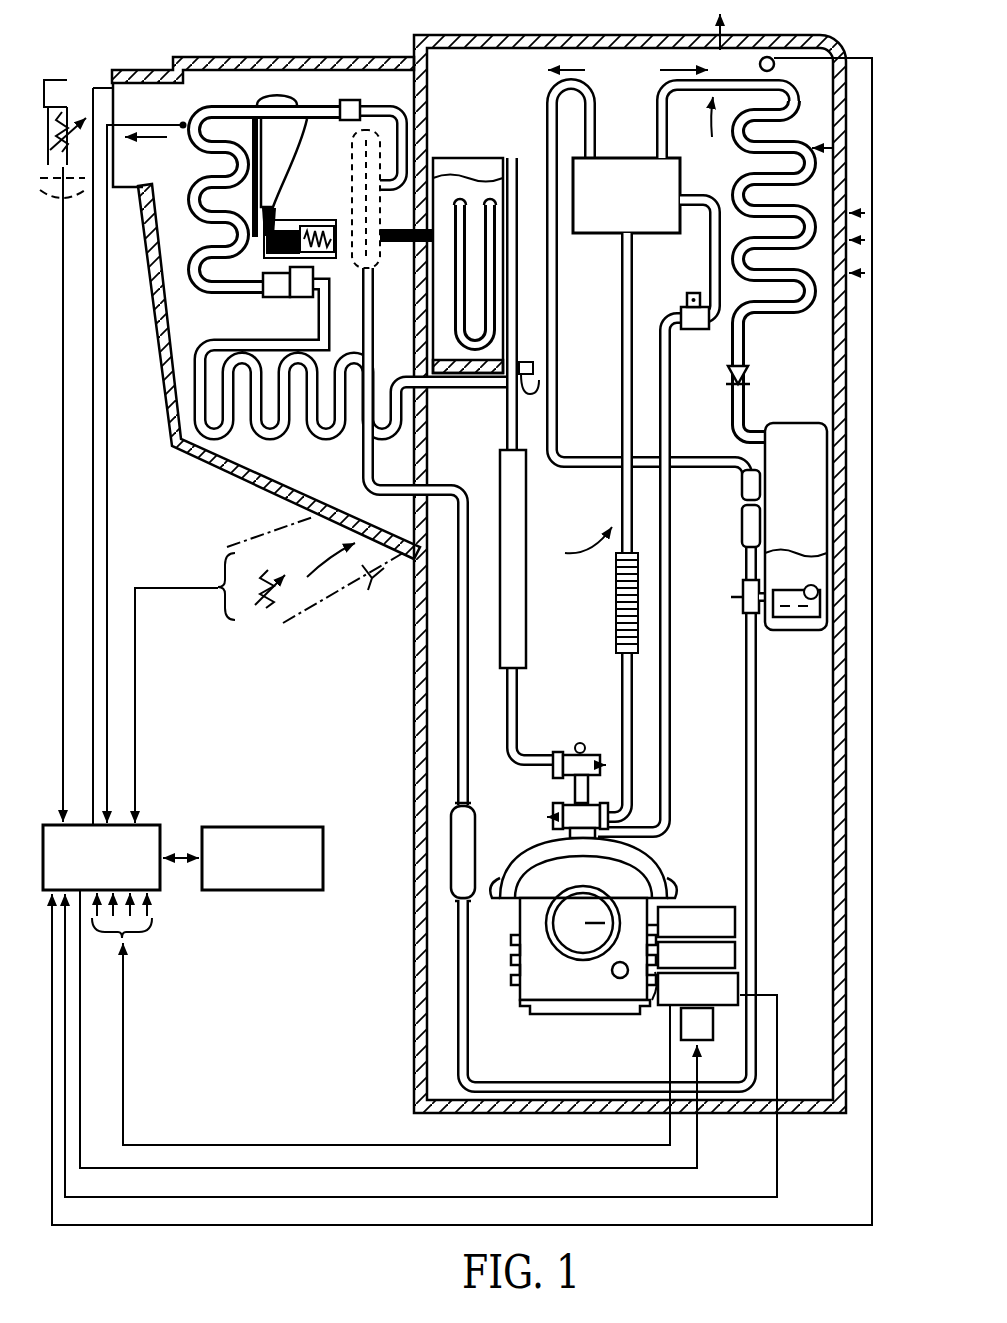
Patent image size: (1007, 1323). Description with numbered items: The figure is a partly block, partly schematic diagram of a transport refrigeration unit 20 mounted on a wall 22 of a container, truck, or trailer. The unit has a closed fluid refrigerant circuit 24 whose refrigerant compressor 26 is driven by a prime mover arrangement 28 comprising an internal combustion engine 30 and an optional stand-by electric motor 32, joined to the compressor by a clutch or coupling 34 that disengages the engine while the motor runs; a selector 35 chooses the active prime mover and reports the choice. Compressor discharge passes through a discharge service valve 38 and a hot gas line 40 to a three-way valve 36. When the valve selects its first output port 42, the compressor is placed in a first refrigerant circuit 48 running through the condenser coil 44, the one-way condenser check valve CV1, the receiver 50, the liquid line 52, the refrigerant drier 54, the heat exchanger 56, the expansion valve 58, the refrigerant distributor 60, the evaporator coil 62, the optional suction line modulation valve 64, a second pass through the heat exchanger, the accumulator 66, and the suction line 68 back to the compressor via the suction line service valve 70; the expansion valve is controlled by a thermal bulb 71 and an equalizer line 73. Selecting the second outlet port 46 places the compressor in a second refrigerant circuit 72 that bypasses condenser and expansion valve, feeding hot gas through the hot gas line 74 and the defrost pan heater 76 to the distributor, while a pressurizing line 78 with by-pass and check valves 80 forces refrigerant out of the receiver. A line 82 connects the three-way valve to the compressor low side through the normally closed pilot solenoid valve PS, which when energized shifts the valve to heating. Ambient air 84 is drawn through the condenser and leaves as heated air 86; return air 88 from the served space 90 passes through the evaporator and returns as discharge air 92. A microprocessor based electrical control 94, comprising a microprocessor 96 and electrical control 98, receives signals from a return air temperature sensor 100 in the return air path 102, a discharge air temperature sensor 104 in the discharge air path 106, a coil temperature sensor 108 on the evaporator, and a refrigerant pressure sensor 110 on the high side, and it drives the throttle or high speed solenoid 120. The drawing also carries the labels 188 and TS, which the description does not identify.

The transport refrigeration unit 20 is at (382, 1259).
The wall 22 is at (428, 108).
The closed fluid refrigerant circuit 24 is at (575, 546).
The refrigerant compressor 26 is at (520, 970).
The prime mover arrangement 28 is at (726, 936).
The internal combustion engine 30 is at (652, 1000).
The stand-by electric motor 32 is at (736, 922).
The clutch or coupling 34 is at (736, 956).
The selector 35 is at (739, 987).
The three-way valve 36 is at (614, 139).
The discharge service valve 38 is at (563, 812).
The hot gas line 40 is at (618, 473).
The first output port 42 is at (669, 157).
The condenser coil 44 is at (810, 264).
The second outlet port 46 is at (582, 148).
The first refrigerant circuit 48 is at (660, 70).
The receiver 50 is at (800, 618).
The liquid line 52 is at (758, 740).
The refrigerant drier 54 is at (451, 846).
The heat exchanger 56 is at (374, 268).
The expansion valve 58 is at (272, 297).
The refrigerant distributor 60 is at (314, 292).
The evaporator coil 62 is at (188, 228).
The controllable suction line modulation valve 64 is at (356, 100).
The accumulator 66 is at (468, 158).
The suction line 68 is at (506, 425).
The suction line service valve 70 is at (580, 750).
The thermal bulb 71 is at (272, 92).
The second refrigerant circuit 72 is at (585, 70).
The equalizer line 73 is at (296, 168).
The hot gas line 74 is at (559, 300).
The defrost pan heater 76 is at (286, 432).
The by-pass or pressurizing line 78 is at (598, 458).
The by-pass and check valves 80 is at (741, 521).
The conduit or line 82 is at (672, 548).
The ambient air 84 is at (852, 208).
The heated air 86 is at (717, 24).
The return air 88 is at (314, 568).
The served space 90 is at (219, 534).
The discharge air 92 is at (166, 140).
The microprocessor based electrical control 94 is at (183, 854).
The microprocessor 96 is at (158, 824).
The electrical control 98 is at (285, 826).
The return air temperature sensor 100 is at (270, 606).
The return air path 102 is at (375, 592).
The discharge air temperature sensor 104 is at (82, 100).
The discharge air path 106 is at (47, 80).
The coil temperature sensor 108 is at (183, 124).
The refrigerant pressure sensor 110 is at (769, 56).
The throttle or high speed solenoid 120 is at (714, 1022).
The pilot solenoid valve 188 is at (541, 384).
The pilot solenoid valve PS is at (688, 306).
The one-way condenser check valve CV1 is at (728, 377).
The temperature sensor TS is at (697, 1024).